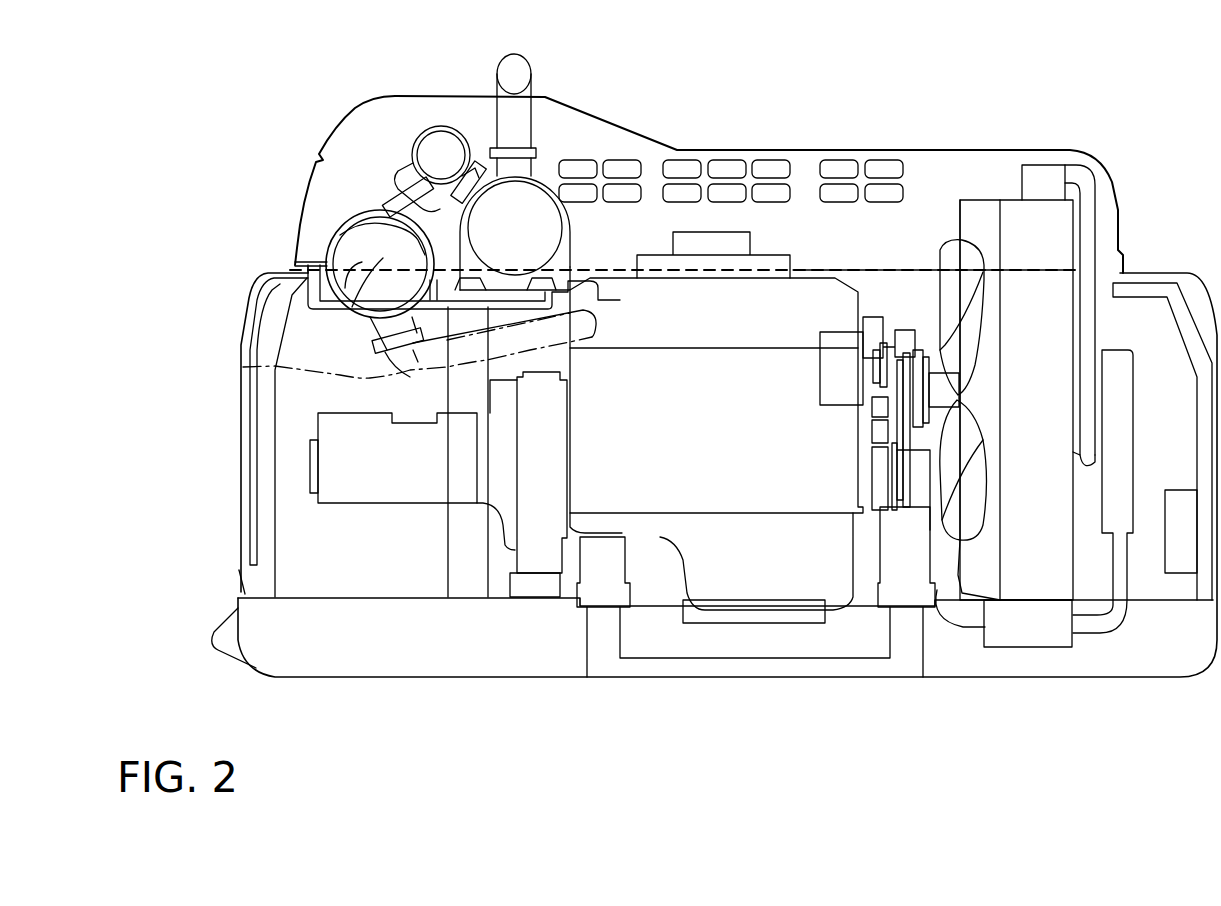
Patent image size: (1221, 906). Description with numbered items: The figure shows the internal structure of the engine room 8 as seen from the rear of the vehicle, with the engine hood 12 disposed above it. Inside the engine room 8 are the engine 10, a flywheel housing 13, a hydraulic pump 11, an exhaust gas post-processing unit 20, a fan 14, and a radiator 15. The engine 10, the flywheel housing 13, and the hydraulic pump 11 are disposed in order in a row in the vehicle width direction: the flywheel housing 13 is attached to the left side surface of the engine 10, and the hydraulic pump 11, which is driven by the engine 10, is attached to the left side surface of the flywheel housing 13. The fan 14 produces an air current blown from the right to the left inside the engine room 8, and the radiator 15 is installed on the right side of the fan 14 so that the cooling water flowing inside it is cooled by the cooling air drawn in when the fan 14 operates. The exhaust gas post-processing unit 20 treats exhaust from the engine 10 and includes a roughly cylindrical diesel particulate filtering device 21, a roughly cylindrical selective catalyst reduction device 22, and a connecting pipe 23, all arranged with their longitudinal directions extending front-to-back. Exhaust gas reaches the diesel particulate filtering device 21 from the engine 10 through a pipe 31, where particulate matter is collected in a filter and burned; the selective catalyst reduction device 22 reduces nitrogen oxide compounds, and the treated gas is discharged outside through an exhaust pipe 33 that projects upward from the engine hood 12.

The engine room 8 is at (806, 178).
The engine 10 is at (750, 502).
The hydraulic pump 11 is at (384, 490).
The engine hood 12 is at (876, 150).
The flywheel housing 13 is at (538, 550).
The fan 14 is at (958, 262).
The radiator 15 is at (1000, 192).
The exhaust gas post-processing unit 20 is at (362, 166).
The diesel particulate filtering device 21 is at (340, 238).
The selective catalyst reduction device 22 is at (527, 207).
The connecting pipe 23 is at (447, 140).
The pipe 31 is at (243, 367).
The exhaust pipe 33 is at (522, 118).